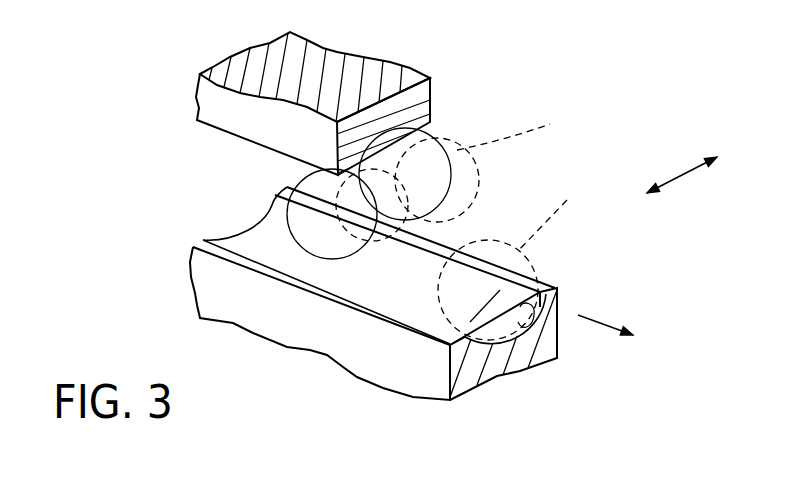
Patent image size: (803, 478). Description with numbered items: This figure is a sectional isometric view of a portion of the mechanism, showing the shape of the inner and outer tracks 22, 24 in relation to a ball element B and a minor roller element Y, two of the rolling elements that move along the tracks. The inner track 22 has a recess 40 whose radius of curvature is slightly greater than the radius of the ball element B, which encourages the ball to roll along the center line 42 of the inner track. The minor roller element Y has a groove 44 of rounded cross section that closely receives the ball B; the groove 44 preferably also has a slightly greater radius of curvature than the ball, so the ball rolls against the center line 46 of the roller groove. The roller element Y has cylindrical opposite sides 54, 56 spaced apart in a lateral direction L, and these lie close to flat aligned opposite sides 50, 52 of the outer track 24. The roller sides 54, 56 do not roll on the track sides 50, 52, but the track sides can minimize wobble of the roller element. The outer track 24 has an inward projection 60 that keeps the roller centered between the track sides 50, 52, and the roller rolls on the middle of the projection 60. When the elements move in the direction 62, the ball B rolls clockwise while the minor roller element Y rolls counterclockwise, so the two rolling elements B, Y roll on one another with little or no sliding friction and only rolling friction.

The inner track 22 is at (430, 327).
The outer track 24 is at (262, 148).
The recess 40 is at (545, 358).
The center line of the inner track 42 is at (517, 267).
The groove 44 is at (387, 262).
The center line of the roller element groove 46 is at (463, 321).
The side of the outer track 50 is at (289, 213).
The side of the outer track 52 is at (457, 147).
The cylindrical side of the minor roller element 54 is at (345, 175).
The cylindrical side of the minor roller element 56 is at (470, 197).
The inward projection 60 is at (462, 171).
The direction of movement 62 is at (603, 327).
The ball element B is at (553, 215).
The minor roller element Y is at (504, 126).
The lateral direction L is at (684, 173).